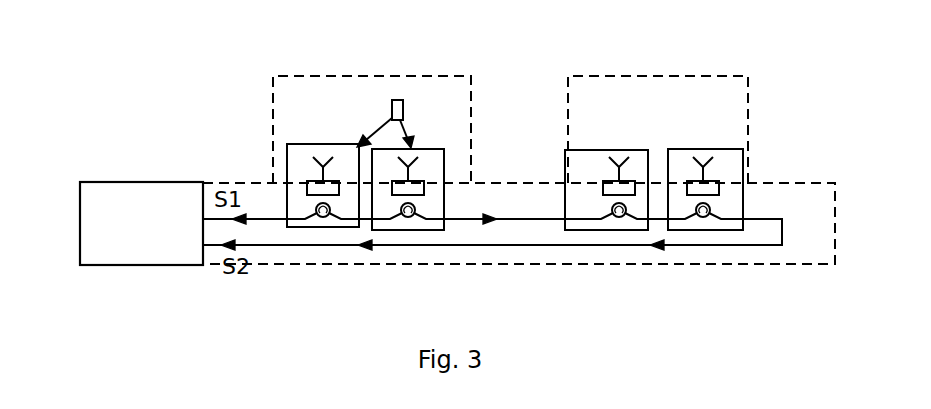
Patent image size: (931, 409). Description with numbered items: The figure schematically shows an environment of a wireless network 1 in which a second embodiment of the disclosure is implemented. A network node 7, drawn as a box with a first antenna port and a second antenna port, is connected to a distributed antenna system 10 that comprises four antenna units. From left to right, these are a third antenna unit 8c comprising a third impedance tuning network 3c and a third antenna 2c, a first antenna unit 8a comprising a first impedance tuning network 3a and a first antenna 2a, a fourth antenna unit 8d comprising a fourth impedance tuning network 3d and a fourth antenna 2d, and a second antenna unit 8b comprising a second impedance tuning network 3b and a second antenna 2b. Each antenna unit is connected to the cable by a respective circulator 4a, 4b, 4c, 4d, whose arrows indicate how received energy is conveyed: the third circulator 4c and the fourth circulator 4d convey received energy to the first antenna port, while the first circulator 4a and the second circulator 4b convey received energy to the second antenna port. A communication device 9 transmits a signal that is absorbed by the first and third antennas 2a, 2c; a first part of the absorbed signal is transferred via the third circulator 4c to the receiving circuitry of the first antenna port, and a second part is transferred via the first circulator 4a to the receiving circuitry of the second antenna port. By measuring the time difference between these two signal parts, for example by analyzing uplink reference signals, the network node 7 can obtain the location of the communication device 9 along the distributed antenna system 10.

The wireless network 1 is at (693, 54).
The network node 7 is at (80, 219).
The communication device 9 is at (396, 100).
The distributed antenna system 10 is at (748, 76).
The first antenna 2a is at (416, 158).
The second antenna 2b is at (704, 157).
The third antenna 2c is at (323, 157).
The fourth antenna 2d is at (619, 157).
The first impedance tuning network 3a is at (424, 188).
The second impedance tuning network 3b is at (719, 190).
The third impedance tuning network 3c is at (307, 187).
The fourth impedance tuning network 3d is at (603, 188).
The first circulator 4a is at (409, 218).
The second circulator 4b is at (706, 216).
The third circulator 4c is at (320, 218).
The fourth circulator 4d is at (619, 218).
The first antenna unit 8a is at (443, 205).
The second antenna unit 8b is at (741, 203).
The third antenna unit 8c is at (298, 212).
The fourth antenna unit 8d is at (623, 204).